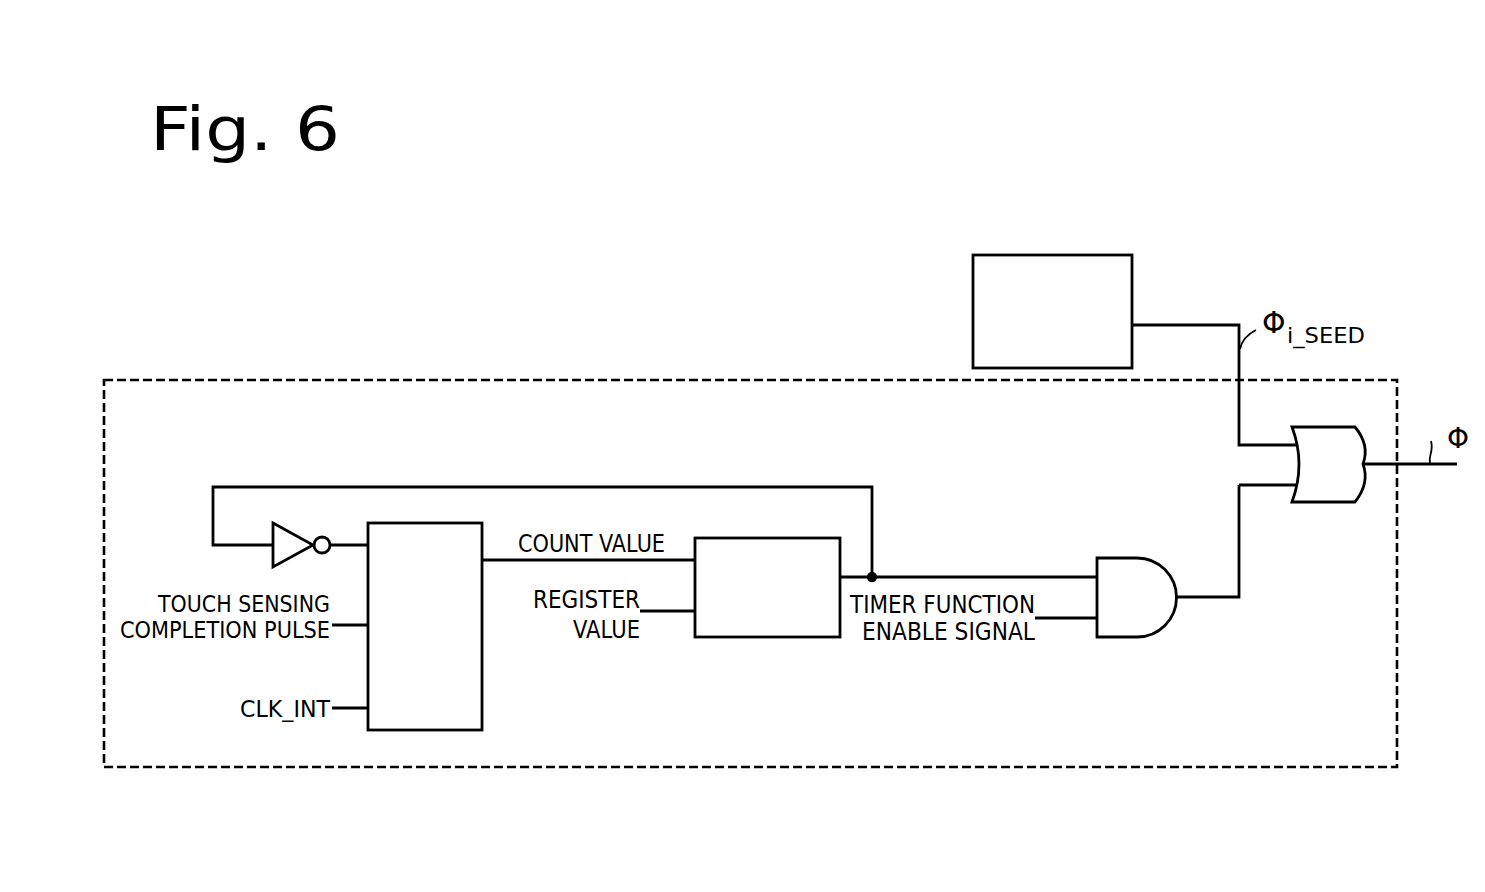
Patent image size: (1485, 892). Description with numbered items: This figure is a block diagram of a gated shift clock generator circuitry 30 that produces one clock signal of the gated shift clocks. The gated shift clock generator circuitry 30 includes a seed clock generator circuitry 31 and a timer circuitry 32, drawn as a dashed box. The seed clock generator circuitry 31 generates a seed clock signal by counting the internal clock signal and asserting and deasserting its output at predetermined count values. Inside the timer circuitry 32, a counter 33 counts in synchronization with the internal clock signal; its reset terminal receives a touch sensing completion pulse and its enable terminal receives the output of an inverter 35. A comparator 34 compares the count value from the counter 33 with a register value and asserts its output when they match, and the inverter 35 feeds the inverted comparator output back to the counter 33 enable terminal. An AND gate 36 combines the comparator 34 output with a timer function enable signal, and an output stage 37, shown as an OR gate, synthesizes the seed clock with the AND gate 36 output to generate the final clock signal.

The gated shift clock generator circuitry 30 is at (1232, 241).
The seed clock generator circuitry 31 is at (1058, 255).
The timer circuitry 32 is at (333, 348).
The counter 33 is at (487, 536).
The comparator 34 is at (791, 538).
The inverter 35 is at (298, 535).
The AND gate 36 is at (1134, 558).
The output stage 37 is at (1315, 504).